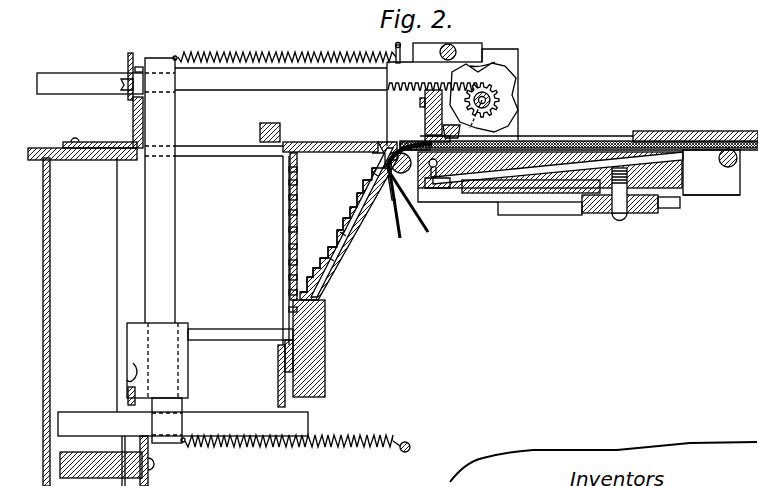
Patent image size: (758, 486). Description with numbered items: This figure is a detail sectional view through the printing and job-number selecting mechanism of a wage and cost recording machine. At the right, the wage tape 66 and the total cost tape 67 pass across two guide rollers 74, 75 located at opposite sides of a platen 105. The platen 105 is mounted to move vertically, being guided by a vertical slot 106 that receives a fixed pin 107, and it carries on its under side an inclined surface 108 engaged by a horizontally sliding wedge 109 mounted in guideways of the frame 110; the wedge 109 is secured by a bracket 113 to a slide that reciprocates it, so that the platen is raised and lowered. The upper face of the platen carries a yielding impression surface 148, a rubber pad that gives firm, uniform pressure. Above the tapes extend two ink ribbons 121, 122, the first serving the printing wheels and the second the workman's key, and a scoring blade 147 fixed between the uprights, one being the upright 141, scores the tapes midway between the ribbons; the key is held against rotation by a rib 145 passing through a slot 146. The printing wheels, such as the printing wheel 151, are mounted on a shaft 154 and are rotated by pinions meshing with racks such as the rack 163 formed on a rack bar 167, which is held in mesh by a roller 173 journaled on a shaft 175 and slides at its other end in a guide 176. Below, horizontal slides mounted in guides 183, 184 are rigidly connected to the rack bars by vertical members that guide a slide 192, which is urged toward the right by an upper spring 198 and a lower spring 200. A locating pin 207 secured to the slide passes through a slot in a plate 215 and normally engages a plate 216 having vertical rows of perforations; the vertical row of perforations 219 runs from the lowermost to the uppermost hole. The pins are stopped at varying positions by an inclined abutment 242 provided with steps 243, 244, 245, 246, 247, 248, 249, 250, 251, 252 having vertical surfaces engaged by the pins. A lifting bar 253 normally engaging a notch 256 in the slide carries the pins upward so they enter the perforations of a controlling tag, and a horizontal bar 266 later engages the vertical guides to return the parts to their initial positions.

The wage tape 66 is at (564, 203).
The total cost tape 67 is at (603, 138).
The guide roller 74 is at (711, 172).
The guide roller 75 is at (391, 186).
The platen 105 is at (568, 142).
The vertical slot 106 is at (433, 184).
The fixed pin 107 is at (428, 185).
The inclined surface 108 is at (482, 196).
The wedge 109 is at (563, 202).
The frame 110 is at (695, 190).
The bracket 113 is at (637, 214).
The ink ribbon 121 is at (498, 140).
The ink ribbon 122 is at (420, 143).
The upright 141 is at (517, 48).
The rib 145 is at (420, 100).
The slot 146 is at (420, 105).
The scoring blade 147 is at (495, 128).
The yielding impression surface 148 is at (513, 147).
The printing wheel 151 is at (503, 77).
The shaft 154 is at (493, 93).
The rack 163 is at (405, 80).
The rack bar 167 is at (237, 80).
The roller 173 is at (470, 66).
The shaft 175 is at (455, 47).
The guide 176 is at (131, 110).
The guide 183 is at (278, 403).
The guide 184 is at (152, 450).
The slide 192 is at (176, 313).
The spring 198 is at (252, 47).
The spring 200 is at (372, 456).
The locating pin 207 is at (238, 340).
The plate 215 is at (284, 153).
The plate 216 is at (298, 198).
The vertical row of perforations 219 is at (260, 235).
The inclined abutment 242 is at (352, 222).
The step 243 is at (325, 320).
The step 244 is at (325, 303).
The step 245 is at (320, 284).
The step 246 is at (327, 258).
The step 247 is at (337, 232).
The step 248 is at (343, 219).
The step 249 is at (350, 207).
The step 250 is at (357, 193).
The step 251 is at (363, 180).
The step 252 is at (372, 168).
The lifting bar 253 is at (128, 394).
The notch 256 is at (133, 363).
The horizontal bar 266 is at (282, 126).